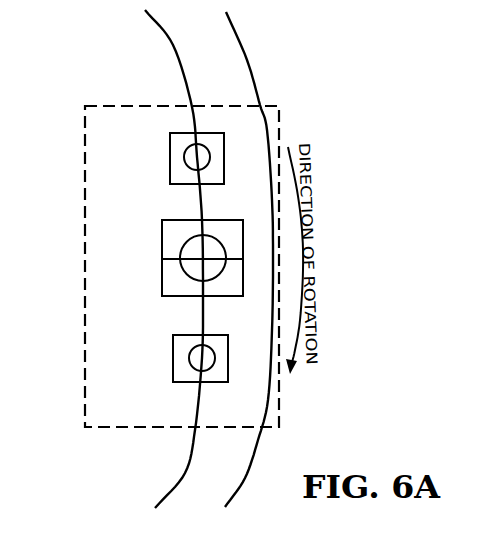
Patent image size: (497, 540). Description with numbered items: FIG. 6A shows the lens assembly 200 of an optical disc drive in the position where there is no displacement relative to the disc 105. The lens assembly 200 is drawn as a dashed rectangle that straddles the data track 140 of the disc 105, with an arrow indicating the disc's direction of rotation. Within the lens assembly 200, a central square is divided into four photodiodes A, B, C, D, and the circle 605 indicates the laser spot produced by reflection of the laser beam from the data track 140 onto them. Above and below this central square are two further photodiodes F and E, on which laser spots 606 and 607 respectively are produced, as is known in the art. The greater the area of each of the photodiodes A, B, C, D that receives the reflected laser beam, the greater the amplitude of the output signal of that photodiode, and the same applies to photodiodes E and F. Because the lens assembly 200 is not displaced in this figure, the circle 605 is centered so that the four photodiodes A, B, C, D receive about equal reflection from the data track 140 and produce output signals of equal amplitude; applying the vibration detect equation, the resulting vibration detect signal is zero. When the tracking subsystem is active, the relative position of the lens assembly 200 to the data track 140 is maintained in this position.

The disc 105 is at (247, 62).
The data track 140 is at (181, 53).
The lens assembly 200 is at (115, 106).
The circle 605 is at (182, 250).
The laser spot 606 is at (187, 155).
The laser spot 607 is at (192, 362).
The photodiode A is at (180, 221).
The photodiode B is at (180, 295).
The photodiode C is at (225, 295).
The photodiode D is at (222, 221).
The photodiode E is at (215, 383).
The photodiode F is at (225, 155).